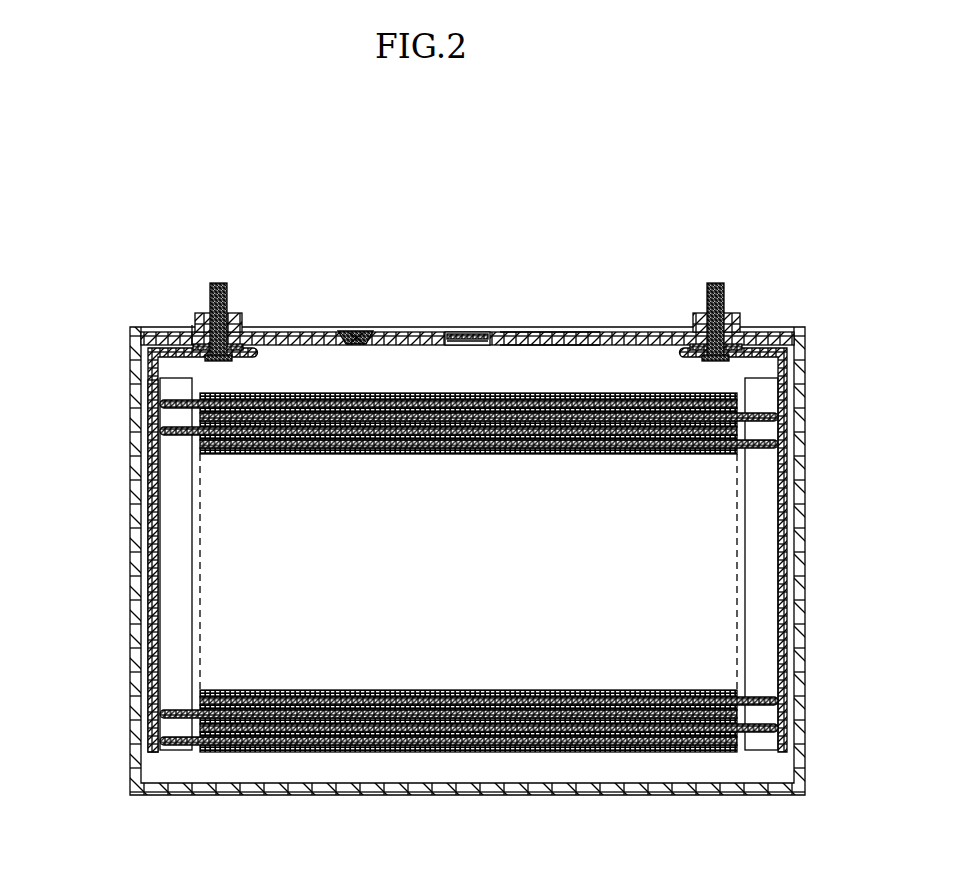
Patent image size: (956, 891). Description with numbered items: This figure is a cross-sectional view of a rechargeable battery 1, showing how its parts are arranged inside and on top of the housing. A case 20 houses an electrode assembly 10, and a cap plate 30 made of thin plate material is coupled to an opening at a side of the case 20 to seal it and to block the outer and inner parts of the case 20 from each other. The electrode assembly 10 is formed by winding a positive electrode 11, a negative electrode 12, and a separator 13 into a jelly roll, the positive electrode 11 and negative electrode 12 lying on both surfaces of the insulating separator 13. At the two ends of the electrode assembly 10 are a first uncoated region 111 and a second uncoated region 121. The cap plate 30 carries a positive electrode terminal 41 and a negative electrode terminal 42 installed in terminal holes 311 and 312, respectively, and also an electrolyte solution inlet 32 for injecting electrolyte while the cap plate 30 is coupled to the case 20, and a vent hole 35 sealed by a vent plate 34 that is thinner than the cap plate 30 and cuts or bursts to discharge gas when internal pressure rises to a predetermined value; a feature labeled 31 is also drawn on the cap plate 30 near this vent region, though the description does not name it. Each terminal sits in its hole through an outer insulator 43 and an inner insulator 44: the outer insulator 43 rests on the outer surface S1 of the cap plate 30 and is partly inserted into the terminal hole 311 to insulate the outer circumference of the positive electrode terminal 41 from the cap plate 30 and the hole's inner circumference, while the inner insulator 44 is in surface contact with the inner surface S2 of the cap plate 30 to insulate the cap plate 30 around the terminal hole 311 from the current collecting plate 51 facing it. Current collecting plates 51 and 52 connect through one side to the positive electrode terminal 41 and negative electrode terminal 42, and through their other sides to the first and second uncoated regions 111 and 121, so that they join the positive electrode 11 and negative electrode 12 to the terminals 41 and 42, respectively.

The rechargeable battery 1 is at (431, 138).
The electrode assembly 10 is at (469, 622).
The positive electrode 11 is at (448, 624).
The negative electrode 12 is at (489, 632).
The separator 13 is at (458, 723).
The first uncoated region 111 is at (182, 762).
The second uncoated region 121 is at (764, 748).
The case 20 is at (643, 784).
The cap plate 30 is at (302, 331).
The vent 31 is at (353, 330).
The electrolyte solution inlet 32 is at (365, 331).
The vent plate 34 is at (482, 331).
The vent hole 35 is at (452, 331).
The positive electrode terminal 41 is at (218, 283).
The negative electrode terminal 42 is at (715, 283).
The outer insulator 43 is at (193, 330).
The inner insulator 44 is at (147, 346).
The current collecting plate 51 is at (137, 403).
The current collecting plate 52 is at (783, 333).
The terminal hole 311 is at (241, 328).
The terminal hole 312 is at (695, 326).
The outer surface of the cap plate S1 is at (552, 320).
The inner surface of the cap plate S2 is at (568, 356).